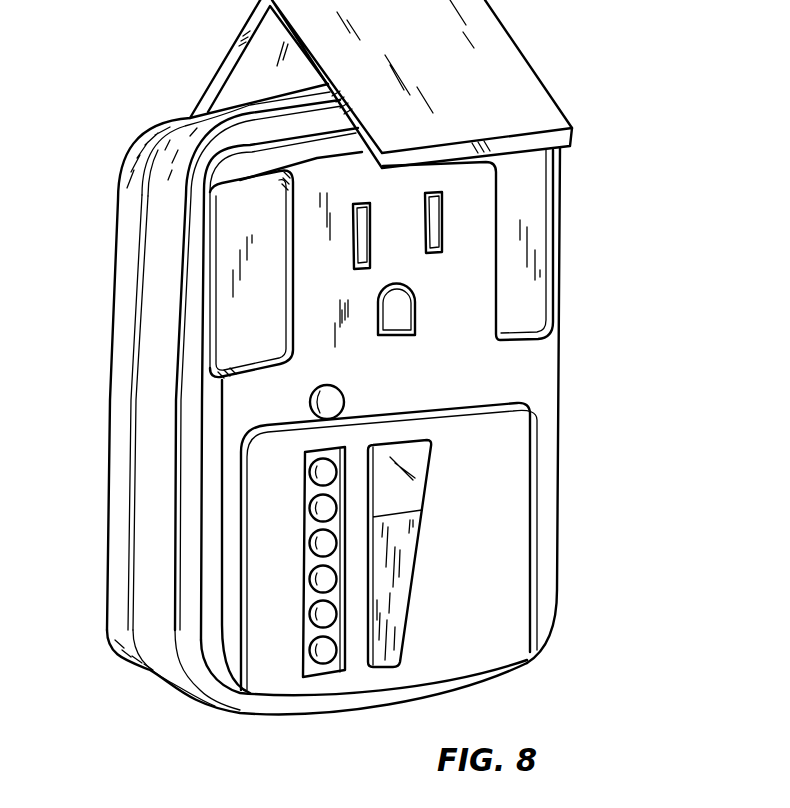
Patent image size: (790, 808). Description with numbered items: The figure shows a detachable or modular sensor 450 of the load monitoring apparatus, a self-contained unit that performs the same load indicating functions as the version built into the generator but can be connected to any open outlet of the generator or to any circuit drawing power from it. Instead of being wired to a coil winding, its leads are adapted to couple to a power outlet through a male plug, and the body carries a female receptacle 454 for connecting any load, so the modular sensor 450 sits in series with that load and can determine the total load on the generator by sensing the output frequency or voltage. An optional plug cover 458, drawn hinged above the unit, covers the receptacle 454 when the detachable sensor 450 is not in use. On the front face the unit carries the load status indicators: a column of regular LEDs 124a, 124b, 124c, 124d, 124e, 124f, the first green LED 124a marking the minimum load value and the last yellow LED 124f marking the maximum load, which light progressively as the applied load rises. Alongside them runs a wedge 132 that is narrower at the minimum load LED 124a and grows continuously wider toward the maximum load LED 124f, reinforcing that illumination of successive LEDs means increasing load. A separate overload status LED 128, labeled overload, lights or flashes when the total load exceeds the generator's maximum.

The detachable or modular sensor 450 is at (649, 317).
The plug cover 458 is at (503, 62).
The female receptacle 454 is at (398, 255).
The overload status LED 128 is at (321, 386).
The wedge 132 is at (530, 418).
The LED 124a is at (310, 647).
The LED 124b is at (310, 610).
The LED 124c is at (310, 575).
The LED 124d is at (310, 539).
The LED 124e is at (310, 504).
The LED 124f is at (310, 469).